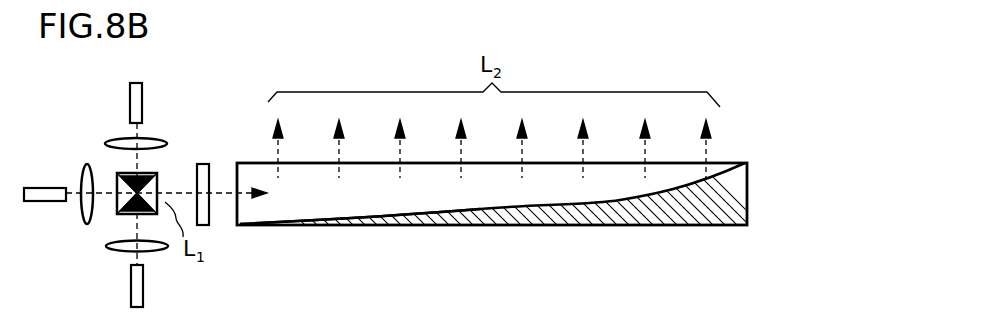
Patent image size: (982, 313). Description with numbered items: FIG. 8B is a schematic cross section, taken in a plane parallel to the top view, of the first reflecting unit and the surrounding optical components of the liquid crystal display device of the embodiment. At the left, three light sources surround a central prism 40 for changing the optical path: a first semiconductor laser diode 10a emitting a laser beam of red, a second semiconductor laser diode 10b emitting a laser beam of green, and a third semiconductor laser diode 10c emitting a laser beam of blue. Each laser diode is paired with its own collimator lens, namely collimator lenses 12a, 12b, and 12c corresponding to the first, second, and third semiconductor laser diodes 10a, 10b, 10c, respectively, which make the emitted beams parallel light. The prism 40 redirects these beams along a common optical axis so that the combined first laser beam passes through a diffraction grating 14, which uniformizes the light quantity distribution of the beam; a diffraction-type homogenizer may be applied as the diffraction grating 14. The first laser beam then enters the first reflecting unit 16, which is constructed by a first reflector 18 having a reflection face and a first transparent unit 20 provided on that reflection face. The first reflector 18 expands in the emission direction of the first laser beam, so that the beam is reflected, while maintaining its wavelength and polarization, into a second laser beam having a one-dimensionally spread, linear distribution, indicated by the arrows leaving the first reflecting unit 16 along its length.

The first semiconductor laser diode 10a is at (143, 100).
The second semiconductor laser diode 10b is at (55, 188).
The third semiconductor laser diode 10c is at (130, 285).
The collimator lens 12a is at (122, 136).
The collimator lens 12b is at (78, 212).
The collimator lens 12c is at (150, 255).
The diffraction grating 14 is at (203, 158).
The first reflecting unit 16 is at (758, 205).
The first reflector 18 is at (637, 213).
The first transparent unit 20 is at (385, 193).
The prism 40 is at (116, 172).